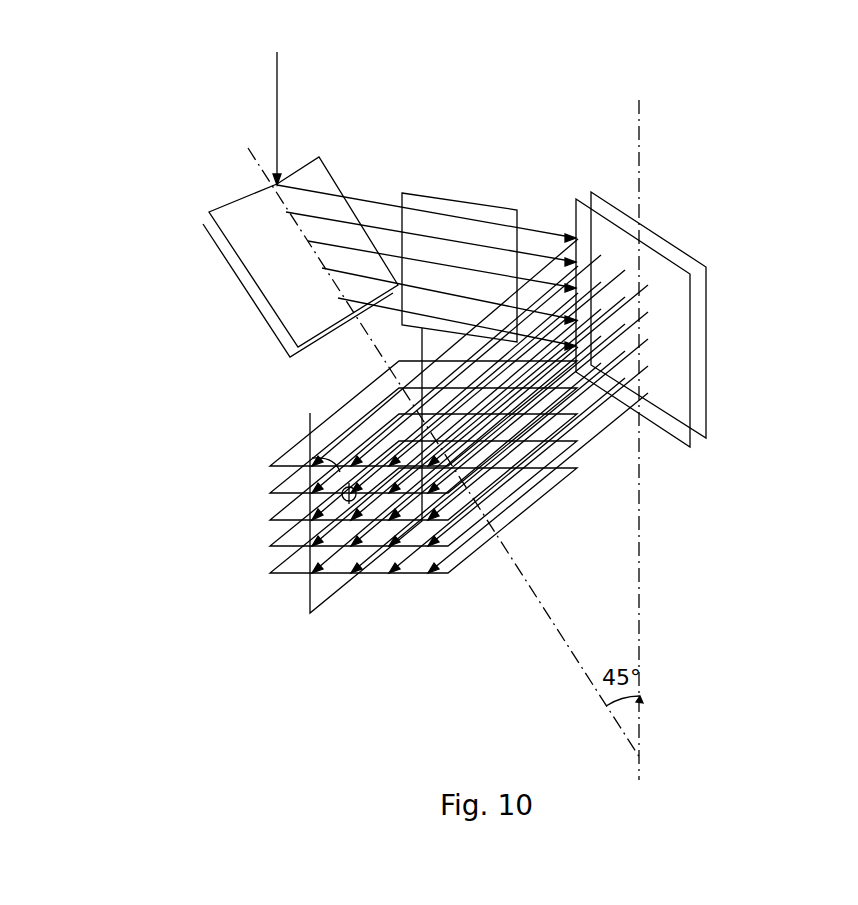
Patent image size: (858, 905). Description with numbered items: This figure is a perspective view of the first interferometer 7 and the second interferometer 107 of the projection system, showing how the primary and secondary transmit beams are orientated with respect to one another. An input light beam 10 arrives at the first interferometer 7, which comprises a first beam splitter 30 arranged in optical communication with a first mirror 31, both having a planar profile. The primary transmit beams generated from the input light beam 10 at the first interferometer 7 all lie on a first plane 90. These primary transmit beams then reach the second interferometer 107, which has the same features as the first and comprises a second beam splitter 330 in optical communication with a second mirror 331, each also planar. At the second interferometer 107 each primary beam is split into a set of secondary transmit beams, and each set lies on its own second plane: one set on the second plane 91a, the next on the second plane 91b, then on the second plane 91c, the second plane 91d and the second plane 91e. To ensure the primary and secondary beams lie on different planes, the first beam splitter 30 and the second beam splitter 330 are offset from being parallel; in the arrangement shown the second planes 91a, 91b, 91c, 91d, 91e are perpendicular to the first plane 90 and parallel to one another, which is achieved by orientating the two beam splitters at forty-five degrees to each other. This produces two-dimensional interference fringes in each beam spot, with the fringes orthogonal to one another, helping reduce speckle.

The first interferometer 7 is at (203, 225).
The input light beam 10 is at (277, 100).
The first beam splitter 30 is at (323, 187).
The first mirror 31 is at (230, 262).
The first plane 90 is at (442, 208).
The second plane 91a is at (273, 463).
The second plane 91b is at (273, 490).
The second plane 91c is at (273, 517).
The second plane 91d is at (273, 543).
The second plane 91e is at (273, 570).
The second interferometer 107 is at (692, 319).
The second beam splitter 330 is at (685, 363).
The second mirror 331 is at (702, 327).